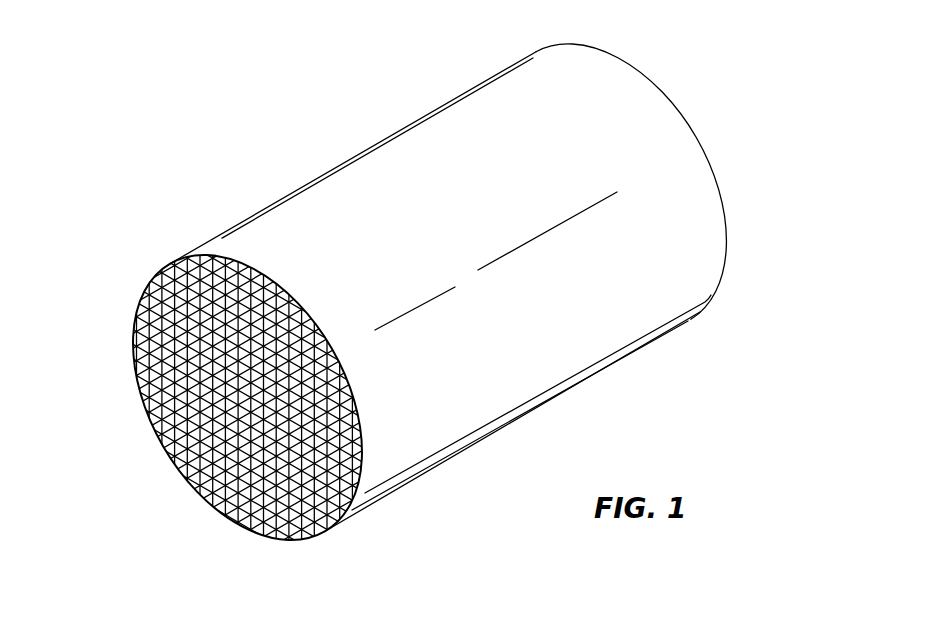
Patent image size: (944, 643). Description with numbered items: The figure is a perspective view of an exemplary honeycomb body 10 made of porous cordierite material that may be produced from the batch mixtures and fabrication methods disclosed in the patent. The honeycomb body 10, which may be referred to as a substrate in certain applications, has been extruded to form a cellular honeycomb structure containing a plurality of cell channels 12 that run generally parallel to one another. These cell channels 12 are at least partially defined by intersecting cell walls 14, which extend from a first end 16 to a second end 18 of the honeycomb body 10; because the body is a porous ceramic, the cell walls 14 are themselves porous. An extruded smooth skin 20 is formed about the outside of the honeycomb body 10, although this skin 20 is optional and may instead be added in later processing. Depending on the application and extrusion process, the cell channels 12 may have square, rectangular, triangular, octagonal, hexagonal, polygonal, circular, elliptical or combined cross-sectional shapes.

The honeycomb body 10 is at (795, 41).
The cell channels 12 is at (135, 340).
The cell walls 14 is at (167, 440).
The first end 16 is at (138, 308).
The second end 18 is at (648, 77).
The skin 20 is at (386, 178).